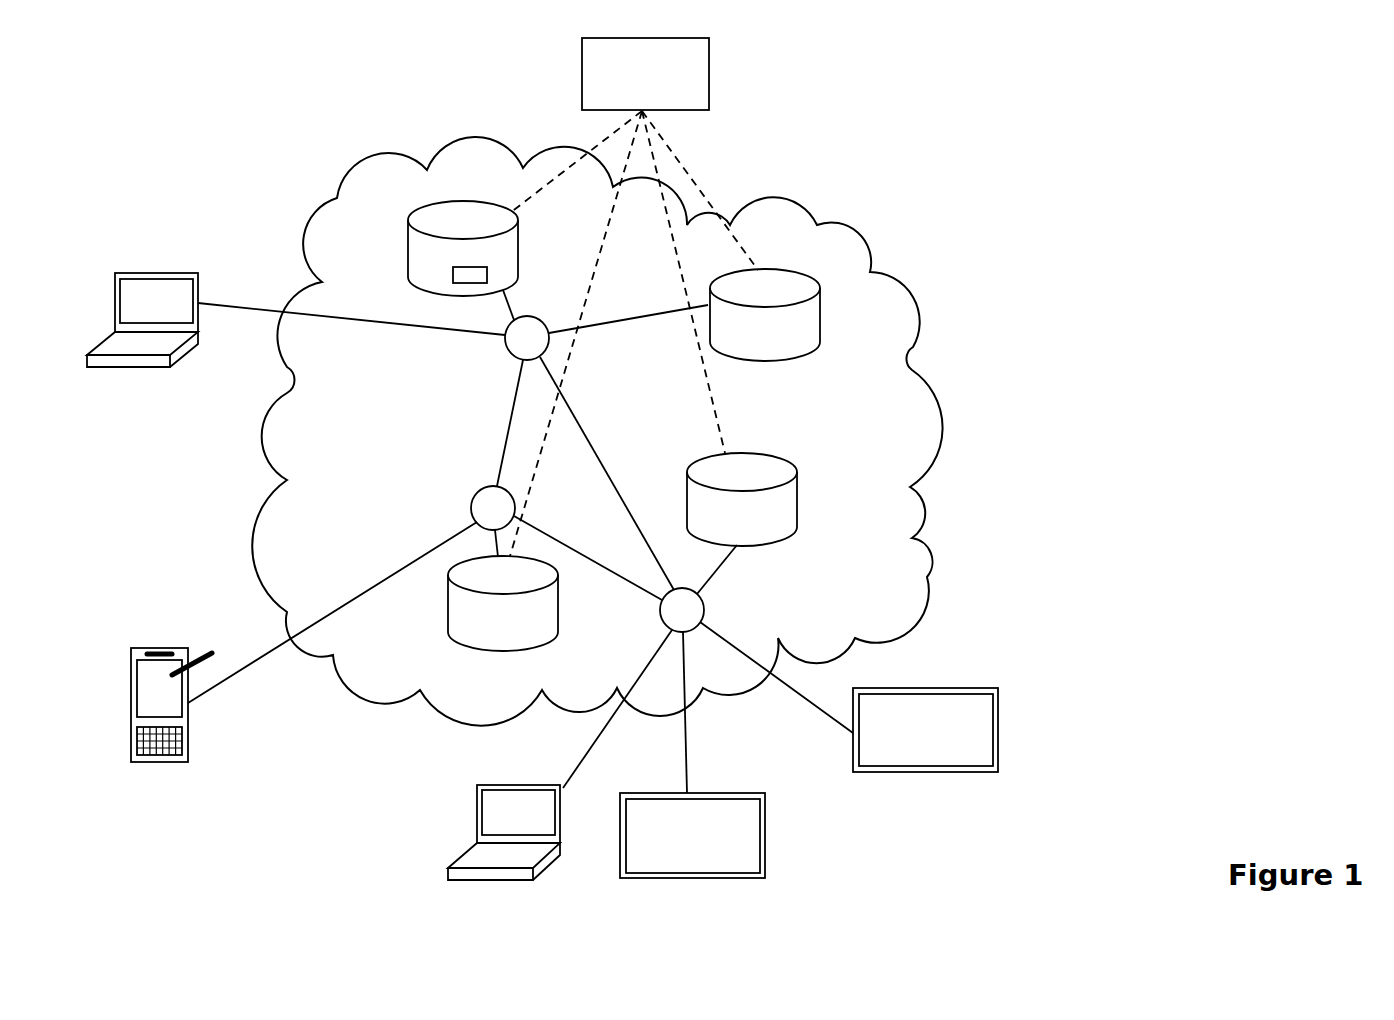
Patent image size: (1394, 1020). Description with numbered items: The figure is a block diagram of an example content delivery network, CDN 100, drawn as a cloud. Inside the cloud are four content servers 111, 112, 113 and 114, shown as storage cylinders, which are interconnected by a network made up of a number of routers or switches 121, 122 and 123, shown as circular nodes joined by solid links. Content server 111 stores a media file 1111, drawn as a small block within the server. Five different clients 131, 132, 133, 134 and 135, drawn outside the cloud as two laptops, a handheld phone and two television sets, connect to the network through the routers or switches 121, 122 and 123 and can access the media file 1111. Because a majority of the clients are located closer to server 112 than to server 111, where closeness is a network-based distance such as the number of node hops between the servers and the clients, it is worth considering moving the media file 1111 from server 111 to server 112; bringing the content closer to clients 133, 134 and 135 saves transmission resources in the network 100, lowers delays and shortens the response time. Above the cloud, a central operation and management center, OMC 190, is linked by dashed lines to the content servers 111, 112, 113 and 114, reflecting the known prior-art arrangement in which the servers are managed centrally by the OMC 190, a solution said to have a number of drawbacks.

The content delivery network 100 is at (252, 583).
The content server 111 is at (429, 264).
The media file 1111 is at (470, 283).
The content server 112 is at (797, 512).
The content server 113 is at (448, 613).
The content server 114 is at (770, 358).
The router or switch 121 is at (543, 352).
The router or switch 122 is at (706, 612).
The router or switch 123 is at (472, 510).
The client 131 is at (145, 367).
The client 132 is at (188, 727).
The client 133 is at (507, 880).
The client 134 is at (687, 878).
The client 135 is at (902, 772).
The operation and management center 190 is at (709, 57).